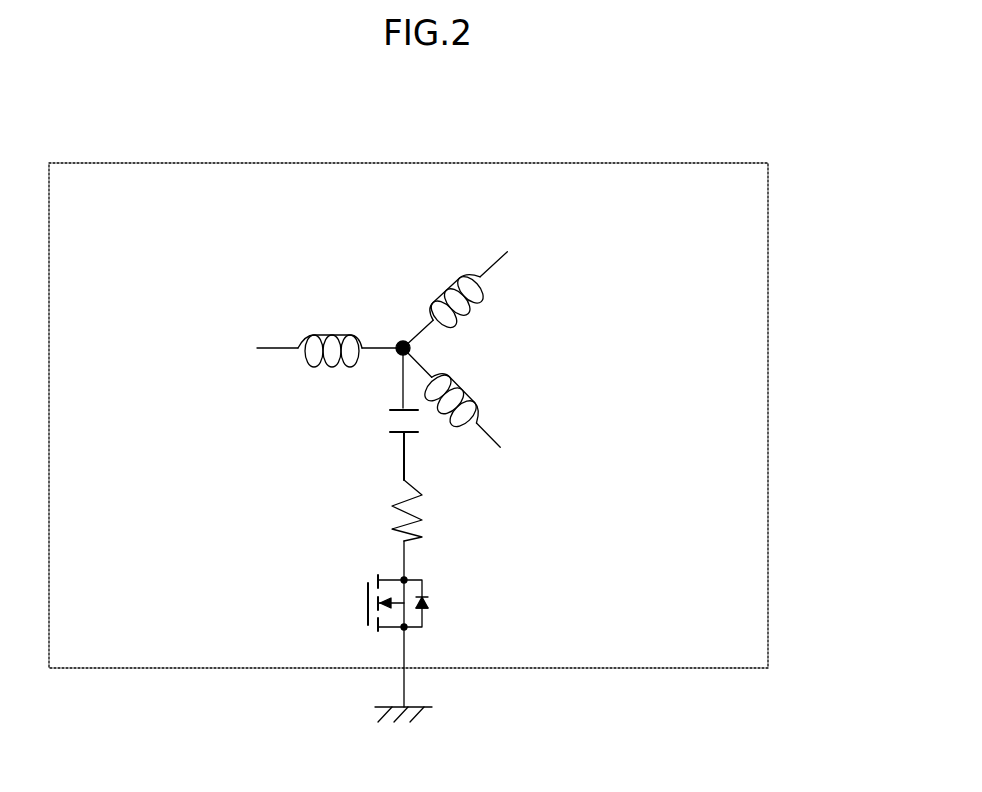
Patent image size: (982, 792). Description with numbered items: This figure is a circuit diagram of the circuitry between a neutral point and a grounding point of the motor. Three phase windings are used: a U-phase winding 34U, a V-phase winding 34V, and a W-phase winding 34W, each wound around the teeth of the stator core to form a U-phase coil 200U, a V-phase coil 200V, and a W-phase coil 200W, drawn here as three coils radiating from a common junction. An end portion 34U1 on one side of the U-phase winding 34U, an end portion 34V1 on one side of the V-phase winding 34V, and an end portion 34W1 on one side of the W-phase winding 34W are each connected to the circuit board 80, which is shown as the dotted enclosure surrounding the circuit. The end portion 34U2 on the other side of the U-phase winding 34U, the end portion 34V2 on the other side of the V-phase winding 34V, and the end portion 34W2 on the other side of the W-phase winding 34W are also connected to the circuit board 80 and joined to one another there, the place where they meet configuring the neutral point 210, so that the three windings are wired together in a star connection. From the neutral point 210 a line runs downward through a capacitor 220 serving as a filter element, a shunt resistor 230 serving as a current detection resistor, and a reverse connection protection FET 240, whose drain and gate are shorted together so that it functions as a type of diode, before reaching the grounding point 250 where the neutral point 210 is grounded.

The circuit board 80 is at (768, 479).
The U-phase winding 34U is at (278, 261).
The end portion on one side of the U-phase winding 34U1 is at (283, 347).
The end portion on the other side of the U-phase winding 34U2 is at (397, 345).
The V-phase winding 34V is at (528, 232).
The end portion on one side of the V-phase winding 34V1 is at (490, 267).
The end portion on the other side of the V-phase winding 34V2 is at (403, 343).
The W-phase winding 34W is at (625, 438).
The end portion on one side of the W-phase winding 34W1 is at (490, 436).
The end portion on the other side of the W-phase winding 34W2 is at (410, 347).
The U-phase coil 200U is at (313, 360).
The V-phase coil 200V is at (488, 292).
The W-phase coil 200W is at (463, 432).
The neutral point 210 is at (398, 356).
The capacitor 220 is at (398, 433).
The shunt resistor 230 is at (396, 522).
The reverse connection protection FET 240 is at (423, 623).
The grounding point 250 is at (430, 703).